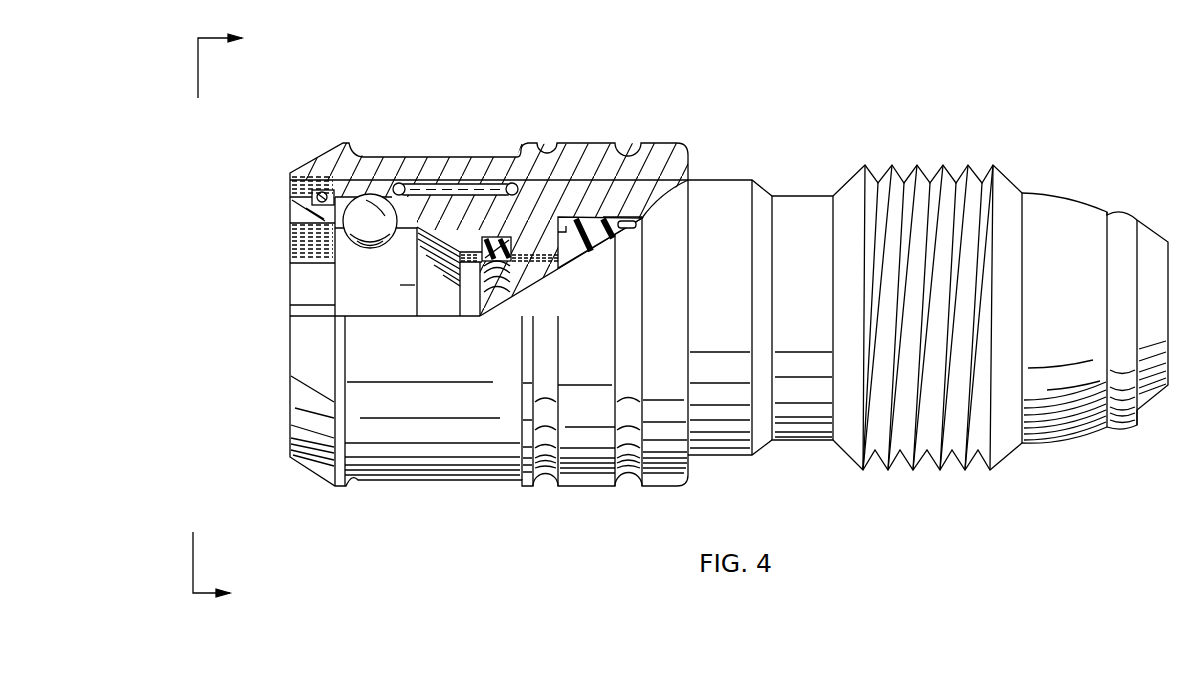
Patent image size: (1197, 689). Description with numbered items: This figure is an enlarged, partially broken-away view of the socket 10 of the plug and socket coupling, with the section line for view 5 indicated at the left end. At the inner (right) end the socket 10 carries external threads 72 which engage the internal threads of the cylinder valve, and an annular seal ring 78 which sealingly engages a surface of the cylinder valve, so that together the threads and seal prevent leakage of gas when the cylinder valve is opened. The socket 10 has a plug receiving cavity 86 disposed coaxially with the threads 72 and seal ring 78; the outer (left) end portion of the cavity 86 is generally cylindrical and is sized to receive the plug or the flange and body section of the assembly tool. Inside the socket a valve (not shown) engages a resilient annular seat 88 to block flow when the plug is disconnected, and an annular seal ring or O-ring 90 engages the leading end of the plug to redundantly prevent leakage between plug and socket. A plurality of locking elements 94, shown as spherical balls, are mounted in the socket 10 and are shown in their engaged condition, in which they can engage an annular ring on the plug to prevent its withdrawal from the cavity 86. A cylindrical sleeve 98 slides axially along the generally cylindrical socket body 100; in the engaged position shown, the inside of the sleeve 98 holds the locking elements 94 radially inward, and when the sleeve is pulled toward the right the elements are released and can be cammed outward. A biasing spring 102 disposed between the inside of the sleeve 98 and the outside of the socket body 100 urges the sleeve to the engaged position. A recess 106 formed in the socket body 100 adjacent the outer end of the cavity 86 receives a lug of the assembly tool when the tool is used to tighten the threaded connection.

The section line 5- 5 is at (223, 317).
The socket 10 is at (851, 128).
The external threads 72 is at (952, 165).
The annular seal ring 78 is at (1122, 222).
The plug receiving cavity 86 is at (395, 263).
The resilient annular seat 88 is at (593, 217).
The annular seal ring or O-ring 90 is at (510, 237).
The locking elements 94 is at (370, 207).
The cylindrical sleeve 98 is at (443, 452).
The socket body 100 is at (637, 197).
The biasing spring 102 is at (506, 188).
The recess 106 is at (302, 248).